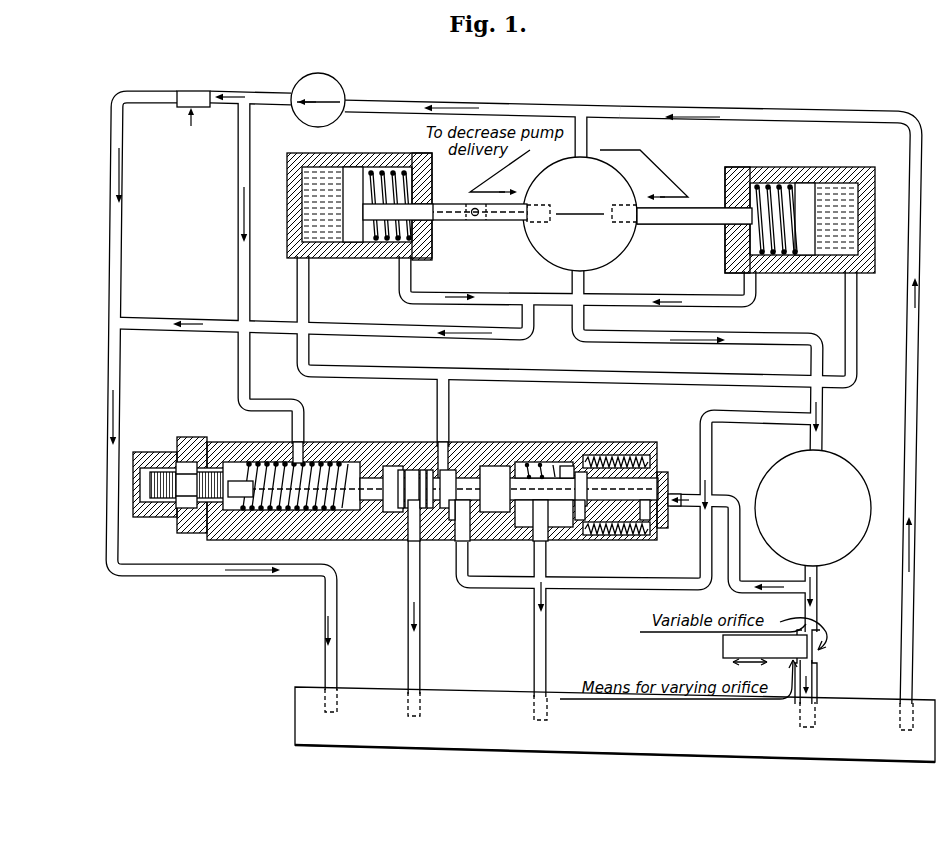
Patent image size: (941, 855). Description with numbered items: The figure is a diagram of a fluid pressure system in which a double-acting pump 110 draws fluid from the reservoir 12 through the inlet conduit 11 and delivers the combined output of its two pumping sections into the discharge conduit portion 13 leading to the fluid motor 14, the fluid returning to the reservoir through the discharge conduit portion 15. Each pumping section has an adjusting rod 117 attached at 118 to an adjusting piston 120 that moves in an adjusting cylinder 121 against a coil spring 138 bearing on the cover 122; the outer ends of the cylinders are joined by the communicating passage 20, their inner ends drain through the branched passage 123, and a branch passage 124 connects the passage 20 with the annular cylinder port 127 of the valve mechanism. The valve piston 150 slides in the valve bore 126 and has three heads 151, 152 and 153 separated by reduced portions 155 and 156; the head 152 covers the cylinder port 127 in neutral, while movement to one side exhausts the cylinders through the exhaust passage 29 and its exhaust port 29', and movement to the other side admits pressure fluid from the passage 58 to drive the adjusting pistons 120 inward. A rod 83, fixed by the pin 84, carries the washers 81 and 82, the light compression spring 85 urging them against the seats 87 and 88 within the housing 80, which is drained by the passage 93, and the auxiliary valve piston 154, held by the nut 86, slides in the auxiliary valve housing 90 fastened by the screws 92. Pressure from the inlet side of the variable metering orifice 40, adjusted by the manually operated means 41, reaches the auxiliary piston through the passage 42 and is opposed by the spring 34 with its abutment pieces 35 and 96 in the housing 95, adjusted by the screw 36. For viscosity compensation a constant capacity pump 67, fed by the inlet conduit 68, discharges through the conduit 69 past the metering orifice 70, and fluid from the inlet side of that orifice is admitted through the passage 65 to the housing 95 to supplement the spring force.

The inlet conduit 11 is at (740, 108).
The reservoir 12 is at (800, 752).
The discharge conduit portion 13 is at (826, 408).
The fluid motor 14 is at (845, 458).
The discharge conduit portion 15 is at (822, 584).
The communicating passage 20 is at (548, 380).
The exhaust passage 29 is at (439, 616).
The exhaust port 29' is at (432, 450).
The spring 34 is at (323, 443).
The abutment piece 35 is at (242, 442).
The screw 36 is at (145, 520).
The metering orifice 40 is at (818, 657).
The manually operated means 41 is at (723, 643).
The passage 42 is at (740, 578).
The passage 58 is at (712, 461).
The passage 65 is at (238, 231).
The constant capacity pump 67 is at (343, 88).
The inlet conduit 68 is at (507, 88).
The discharge conduit 69 is at (228, 93).
The metering orifice 70 is at (192, 91).
The housing 80 is at (545, 447).
The washer 81 is at (565, 450).
The washer 82 is at (598, 455).
The rod 83 is at (585, 450).
The pin 84 is at (488, 541).
The compression spring 85 is at (555, 545).
The nut 86 is at (678, 476).
The seat 87 is at (467, 548).
The seat 88 is at (580, 545).
The auxiliary valve housing 90 is at (655, 472).
The screws 92 is at (650, 545).
The passage 93 is at (548, 645).
The housing 95 is at (328, 541).
The abutment piece 96 is at (360, 445).
The double-acting pump 110 is at (617, 260).
The adjusting rod 117 is at (502, 222).
The attachment 118 is at (473, 217).
The adjusting piston 120 is at (343, 226).
The adjusting cylinder 121 is at (288, 152).
The cover 122 is at (433, 178).
The branched passage 123 is at (525, 315).
The branch passage 124 is at (452, 378).
The valve bore 126 is at (457, 548).
The cylinder port 127 is at (452, 455).
The coil spring 138 is at (400, 166).
The valve piston 150 is at (422, 455).
The head 151 is at (392, 437).
The head 152 is at (420, 545).
The head 153 is at (495, 450).
The auxiliary valve piston 154 is at (630, 455).
The reduced portion 155 is at (403, 545).
The reduced portion 156 is at (437, 545).